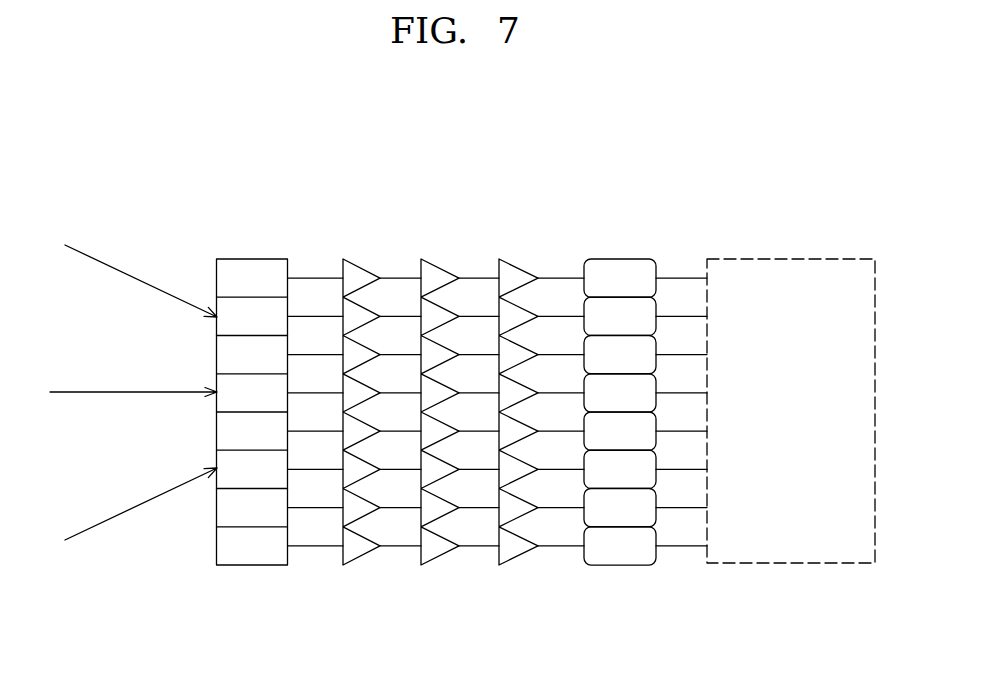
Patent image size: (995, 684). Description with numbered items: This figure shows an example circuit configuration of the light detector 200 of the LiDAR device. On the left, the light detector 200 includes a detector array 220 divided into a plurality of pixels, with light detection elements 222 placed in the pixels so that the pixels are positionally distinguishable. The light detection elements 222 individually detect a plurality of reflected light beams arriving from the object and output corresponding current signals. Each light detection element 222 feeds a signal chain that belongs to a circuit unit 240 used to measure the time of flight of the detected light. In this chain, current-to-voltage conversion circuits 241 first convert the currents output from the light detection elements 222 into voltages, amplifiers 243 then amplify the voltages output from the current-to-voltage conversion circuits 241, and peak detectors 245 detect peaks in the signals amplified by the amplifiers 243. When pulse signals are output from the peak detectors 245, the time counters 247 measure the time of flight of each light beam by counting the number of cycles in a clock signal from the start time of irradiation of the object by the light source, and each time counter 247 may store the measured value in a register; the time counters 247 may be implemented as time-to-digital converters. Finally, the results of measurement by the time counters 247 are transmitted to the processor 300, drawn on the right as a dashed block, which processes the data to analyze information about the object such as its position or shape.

The light detector 200 is at (695, 201).
The detector array 220 is at (256, 578).
The light detection elements 222 is at (252, 264).
The circuit unit 240 is at (342, 617).
The current-to-voltage conversion circuits 241 is at (362, 268).
The amplifiers 243 is at (441, 268).
The peak detectors 245 is at (520, 268).
The time counters 247 is at (618, 262).
The processor 300 is at (790, 563).